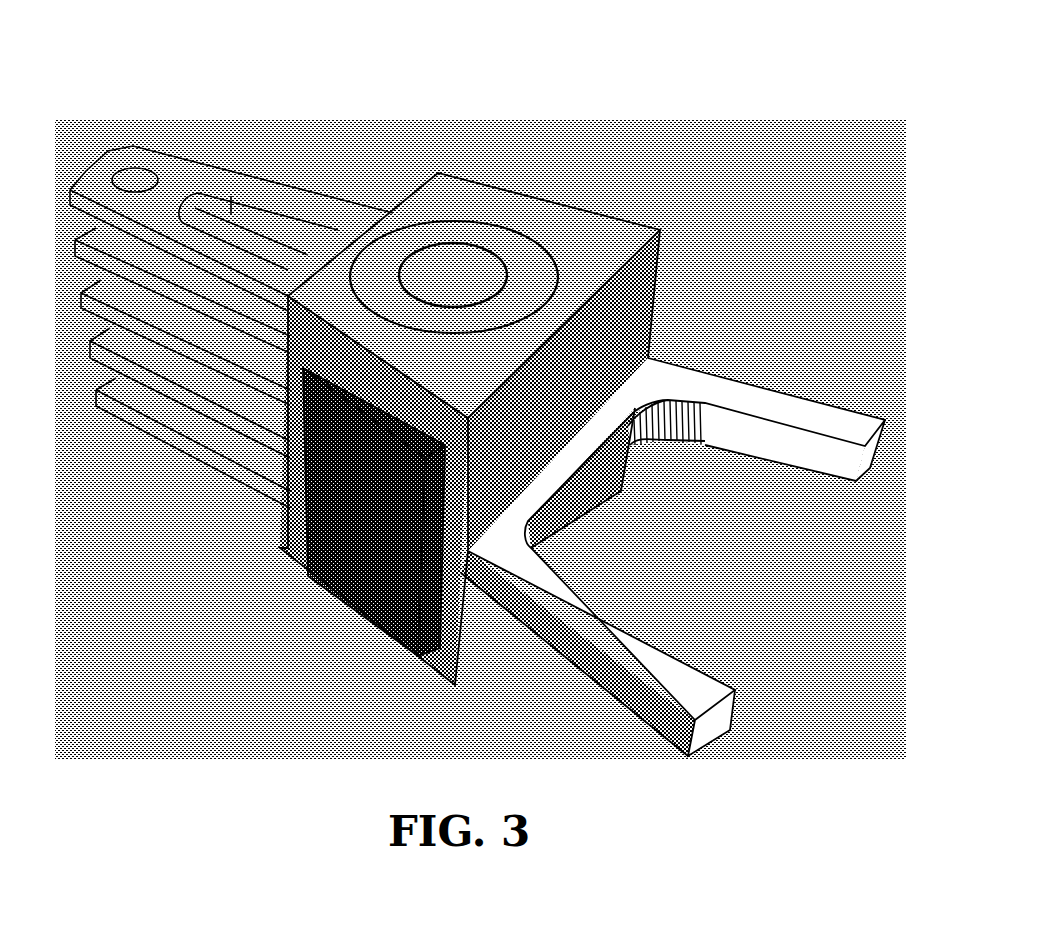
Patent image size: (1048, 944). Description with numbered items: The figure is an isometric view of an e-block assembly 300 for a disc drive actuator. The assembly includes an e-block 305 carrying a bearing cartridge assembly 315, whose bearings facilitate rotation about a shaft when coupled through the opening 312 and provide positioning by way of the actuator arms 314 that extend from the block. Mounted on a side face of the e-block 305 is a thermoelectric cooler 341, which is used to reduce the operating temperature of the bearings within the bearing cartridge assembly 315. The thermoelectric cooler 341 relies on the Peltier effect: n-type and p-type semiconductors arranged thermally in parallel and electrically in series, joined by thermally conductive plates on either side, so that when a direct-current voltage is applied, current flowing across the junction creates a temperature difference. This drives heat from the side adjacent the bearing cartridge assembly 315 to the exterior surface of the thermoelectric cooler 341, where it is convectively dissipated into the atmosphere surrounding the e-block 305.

The e-block assembly 300 is at (934, 55).
The e-block 305 is at (598, 219).
The opening 312 is at (442, 266).
The actuator arms 314 is at (218, 168).
The bearing cartridge assembly 315 is at (515, 265).
The thermoelectric cooler 341 is at (398, 622).